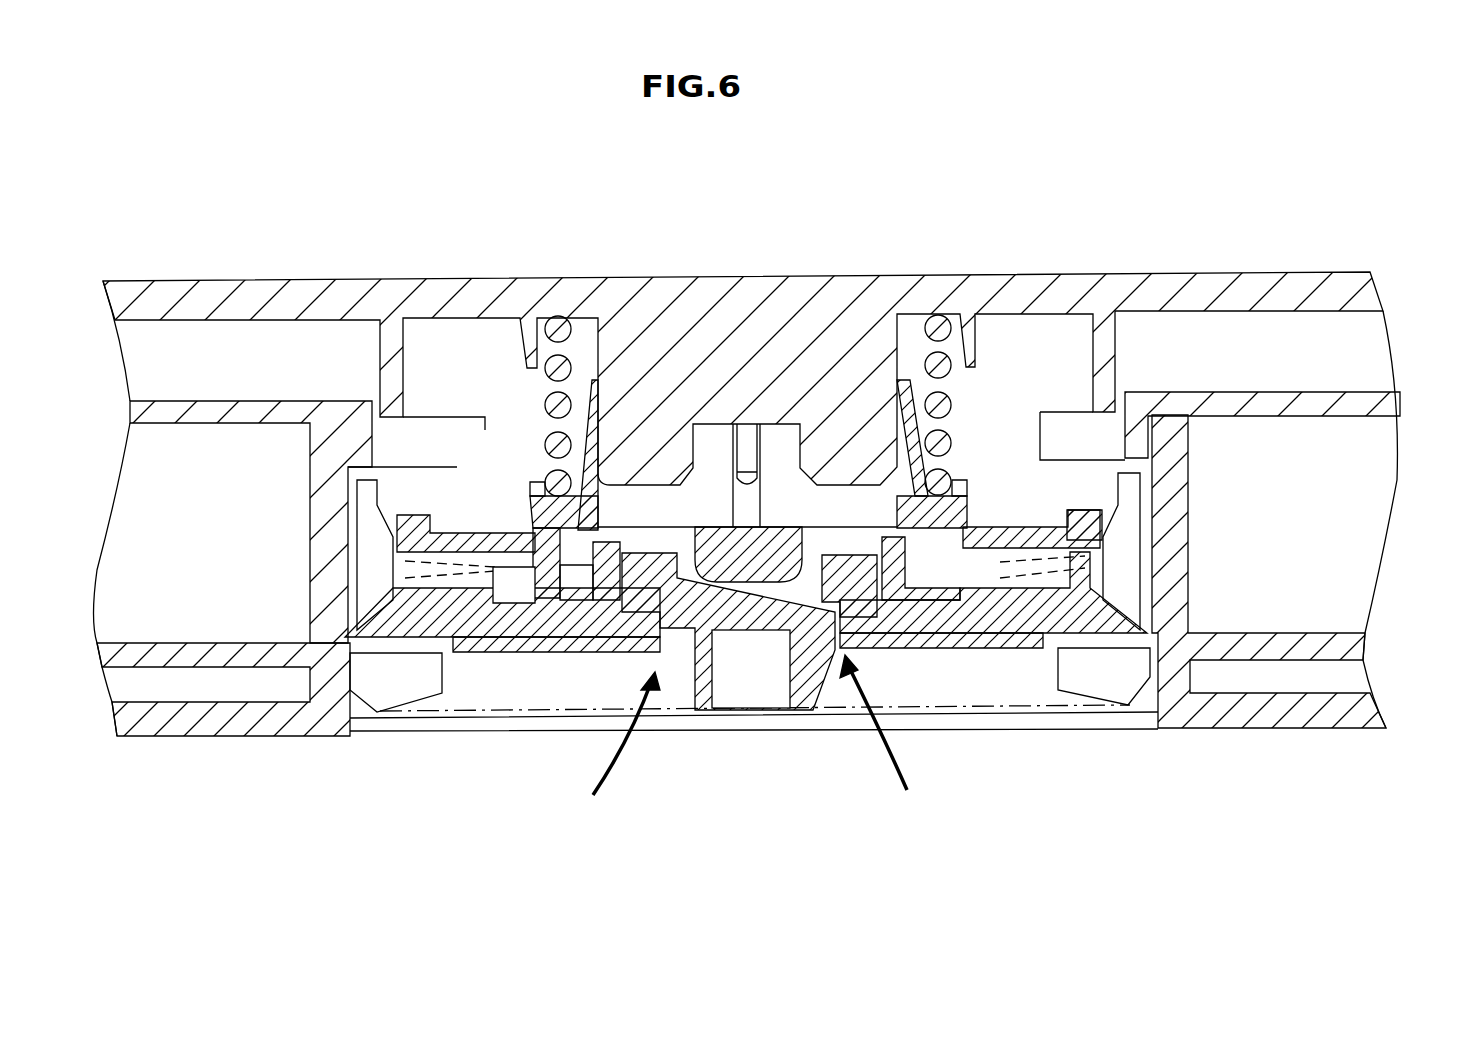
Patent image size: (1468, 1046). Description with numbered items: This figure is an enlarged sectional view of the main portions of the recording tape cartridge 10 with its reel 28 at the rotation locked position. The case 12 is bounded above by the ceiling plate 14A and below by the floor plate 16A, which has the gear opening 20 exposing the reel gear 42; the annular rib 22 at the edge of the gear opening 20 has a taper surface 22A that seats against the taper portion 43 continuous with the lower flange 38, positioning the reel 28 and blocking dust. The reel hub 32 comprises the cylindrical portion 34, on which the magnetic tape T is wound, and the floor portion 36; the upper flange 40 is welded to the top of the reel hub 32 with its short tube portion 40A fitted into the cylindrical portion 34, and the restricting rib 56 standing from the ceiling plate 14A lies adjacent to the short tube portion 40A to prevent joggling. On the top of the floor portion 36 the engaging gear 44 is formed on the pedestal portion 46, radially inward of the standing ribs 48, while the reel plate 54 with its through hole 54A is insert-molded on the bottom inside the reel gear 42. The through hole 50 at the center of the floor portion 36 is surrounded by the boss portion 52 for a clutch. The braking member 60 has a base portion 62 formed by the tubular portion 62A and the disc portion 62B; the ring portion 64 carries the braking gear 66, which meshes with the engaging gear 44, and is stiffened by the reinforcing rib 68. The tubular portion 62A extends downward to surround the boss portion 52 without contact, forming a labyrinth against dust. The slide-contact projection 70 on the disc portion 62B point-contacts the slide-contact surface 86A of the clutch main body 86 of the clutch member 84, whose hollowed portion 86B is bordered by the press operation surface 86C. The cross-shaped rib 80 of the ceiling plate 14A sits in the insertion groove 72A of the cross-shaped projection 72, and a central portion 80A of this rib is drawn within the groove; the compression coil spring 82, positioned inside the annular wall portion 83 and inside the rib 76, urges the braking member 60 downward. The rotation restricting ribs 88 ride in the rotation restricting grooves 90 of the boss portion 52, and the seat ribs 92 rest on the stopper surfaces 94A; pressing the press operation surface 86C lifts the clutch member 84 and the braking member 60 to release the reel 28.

The recording tape cartridge 10 is at (1375, 170).
The case 12 is at (1340, 270).
The ceiling plate 14A is at (1228, 288).
The floor plate 16A is at (1240, 720).
The gear opening 20 is at (1148, 700).
The annular rib 22 is at (1258, 715).
The taper surface 22A is at (1292, 684).
The reel 28 is at (228, 700).
The reel hub 32 is at (1270, 530).
The cylindrical portion 34 is at (1190, 552).
The floor portion 36 is at (1180, 612).
The lower flange 38 is at (1330, 648).
The upper flange 40 is at (1250, 402).
The short tube portion 40A is at (1142, 432).
The reel gear 42 is at (395, 688).
The taper portion 43 is at (333, 690).
The engaging gear 44 is at (410, 582).
The pedestal portion 46 is at (405, 590).
The standing ribs 48 is at (362, 490).
The through hole 50 is at (845, 650).
The boss portion for a clutch 52 is at (962, 535).
The reel plate 54 is at (520, 655).
The through hole 54A is at (667, 713).
The restricting rib 56 is at (1090, 378).
The braking member 60 is at (543, 476).
The base portion 62 is at (583, 800).
The tubular portion 62A is at (536, 600).
The disc portion 62B is at (592, 600).
The ring portion 64 is at (455, 540).
The braking gear 66 is at (395, 567).
The reinforcing rib 68 is at (412, 537).
The slide-contact projection 70 is at (745, 568).
The cross-shaped projection 72 is at (545, 392).
The insertion groove 72A is at (582, 455).
The rib 76 is at (960, 470).
The cross-shaped rib 80 is at (812, 330).
The center hole 80A is at (746, 430).
The compression coil spring 82 is at (565, 325).
The annular wall portion 83 is at (968, 360).
The clutch member 84 is at (672, 705).
The clutch main body 86 is at (700, 712).
The slide-contact surface 86A is at (797, 705).
The hollowed portion 86B is at (768, 715).
The press operation surface 86C is at (737, 700).
The rotation restricting ribs 88 is at (648, 575).
The rotation restricting grooves 90 is at (545, 512).
The seat ribs 92 is at (833, 527).
The stopper surfaces 94A is at (870, 585).
The magnetic tape T is at (1365, 482).